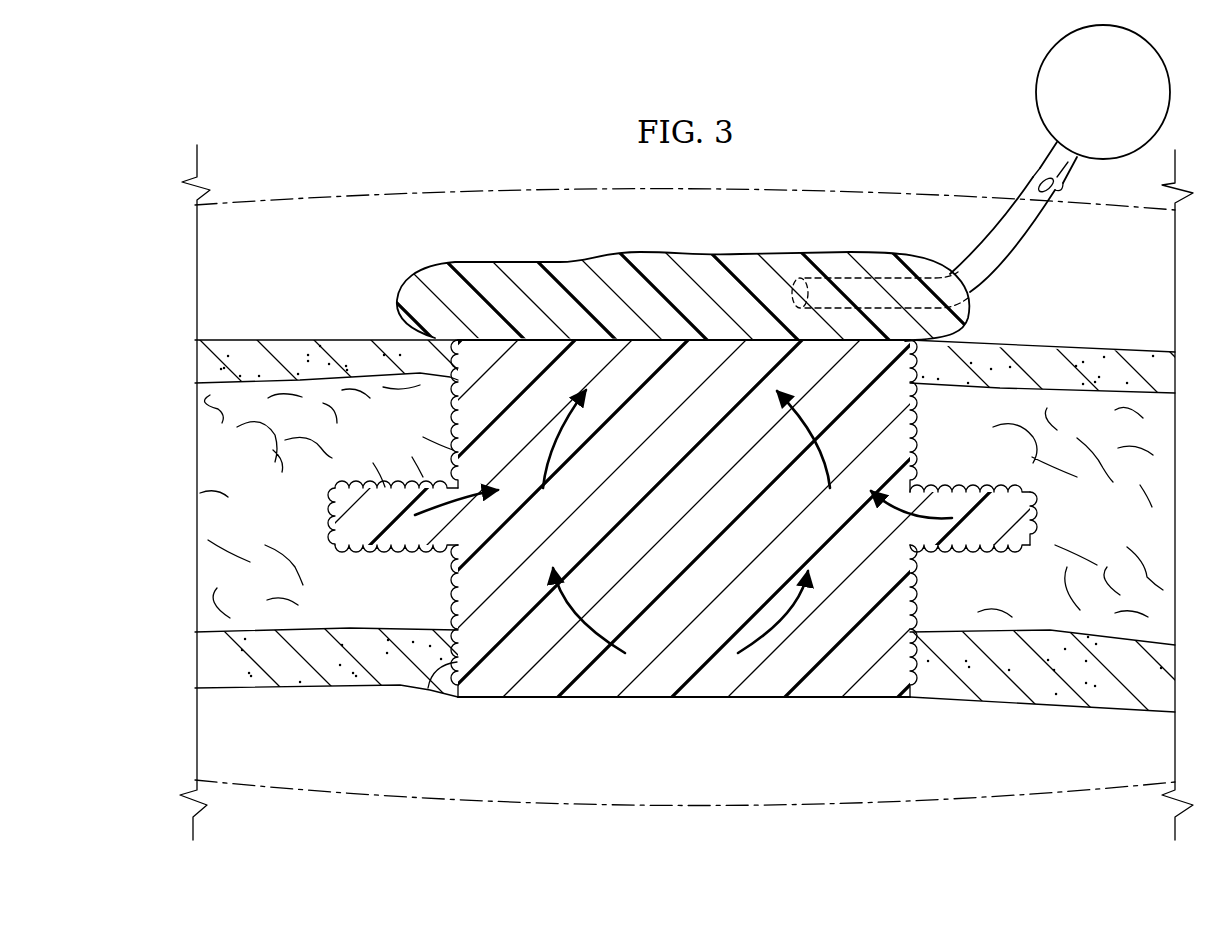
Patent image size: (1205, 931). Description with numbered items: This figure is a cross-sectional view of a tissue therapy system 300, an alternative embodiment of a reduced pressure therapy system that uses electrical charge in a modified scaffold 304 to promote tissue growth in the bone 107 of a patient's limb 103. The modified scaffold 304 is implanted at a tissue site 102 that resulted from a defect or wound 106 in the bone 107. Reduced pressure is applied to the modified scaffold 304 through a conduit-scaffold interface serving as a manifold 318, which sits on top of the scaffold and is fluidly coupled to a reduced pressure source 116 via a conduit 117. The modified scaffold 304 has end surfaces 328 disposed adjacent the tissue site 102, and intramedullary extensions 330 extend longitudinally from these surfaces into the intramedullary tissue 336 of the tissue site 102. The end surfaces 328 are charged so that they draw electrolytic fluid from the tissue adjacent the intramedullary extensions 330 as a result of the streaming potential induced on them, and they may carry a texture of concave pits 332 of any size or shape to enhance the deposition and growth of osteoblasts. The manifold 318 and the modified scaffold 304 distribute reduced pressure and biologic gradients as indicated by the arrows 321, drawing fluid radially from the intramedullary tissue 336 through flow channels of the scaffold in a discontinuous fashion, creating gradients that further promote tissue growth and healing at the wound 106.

The tissue therapy system 300 is at (315, 161).
The tissue site 102 is at (303, 352).
The limb 103 is at (443, 798).
The wound 106 is at (433, 690).
The bone 107 is at (300, 683).
The reduced pressure source 116 is at (1085, 107).
The conduit 117 is at (1002, 218).
The manifold 318 is at (662, 311).
The modified scaffold 304 is at (665, 532).
The arrows 321 is at (590, 624).
The end surfaces 328 is at (458, 597).
The intramedullary extensions 330 is at (342, 545).
The concave pits 332 is at (458, 415).
The intramedullary tissue 336 is at (260, 528).